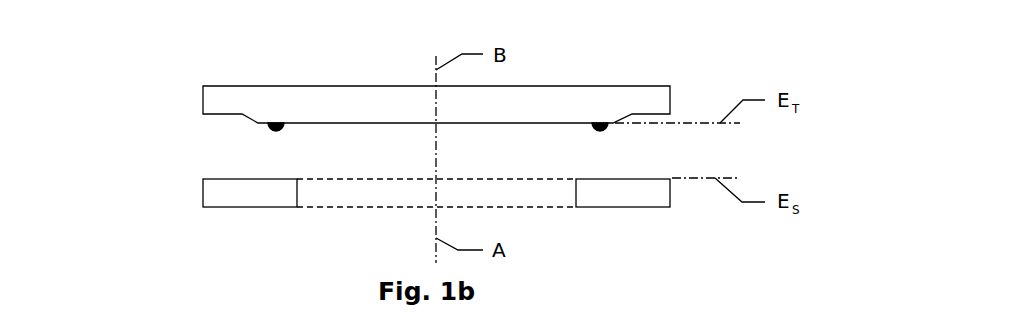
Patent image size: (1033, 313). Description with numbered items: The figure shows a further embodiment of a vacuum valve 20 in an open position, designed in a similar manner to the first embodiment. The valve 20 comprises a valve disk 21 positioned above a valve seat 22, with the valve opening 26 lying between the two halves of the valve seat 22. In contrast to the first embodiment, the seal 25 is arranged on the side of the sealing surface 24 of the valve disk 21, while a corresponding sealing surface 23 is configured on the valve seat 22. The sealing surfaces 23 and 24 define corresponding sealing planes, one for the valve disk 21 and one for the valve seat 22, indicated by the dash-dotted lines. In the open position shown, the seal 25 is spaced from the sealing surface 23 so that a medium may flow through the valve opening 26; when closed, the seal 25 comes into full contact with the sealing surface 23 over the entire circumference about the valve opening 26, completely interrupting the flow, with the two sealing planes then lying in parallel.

The valve 20 is at (402, 146).
The valve disk 21 is at (386, 90).
The valve seat 22 is at (263, 196).
The sealing surface 23 is at (613, 170).
The sealing surface 24 is at (613, 129).
The seal 25 is at (268, 130).
The valve opening 26 is at (391, 197).